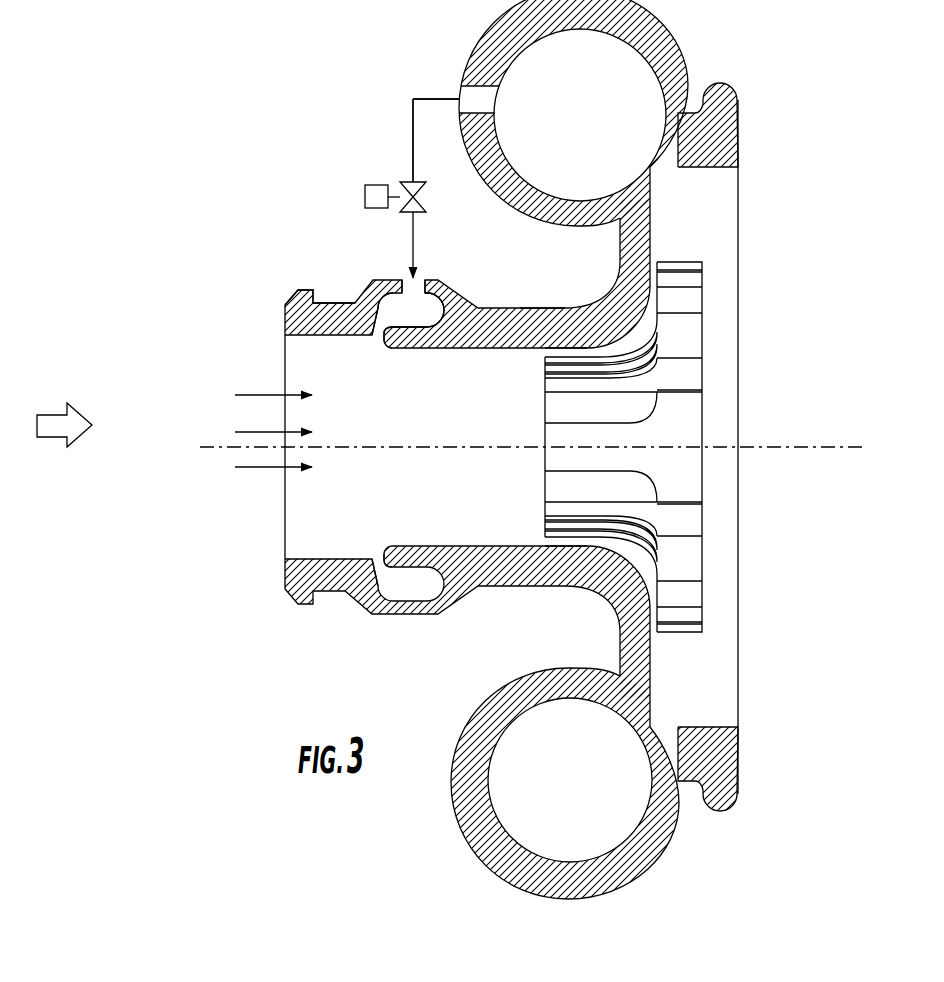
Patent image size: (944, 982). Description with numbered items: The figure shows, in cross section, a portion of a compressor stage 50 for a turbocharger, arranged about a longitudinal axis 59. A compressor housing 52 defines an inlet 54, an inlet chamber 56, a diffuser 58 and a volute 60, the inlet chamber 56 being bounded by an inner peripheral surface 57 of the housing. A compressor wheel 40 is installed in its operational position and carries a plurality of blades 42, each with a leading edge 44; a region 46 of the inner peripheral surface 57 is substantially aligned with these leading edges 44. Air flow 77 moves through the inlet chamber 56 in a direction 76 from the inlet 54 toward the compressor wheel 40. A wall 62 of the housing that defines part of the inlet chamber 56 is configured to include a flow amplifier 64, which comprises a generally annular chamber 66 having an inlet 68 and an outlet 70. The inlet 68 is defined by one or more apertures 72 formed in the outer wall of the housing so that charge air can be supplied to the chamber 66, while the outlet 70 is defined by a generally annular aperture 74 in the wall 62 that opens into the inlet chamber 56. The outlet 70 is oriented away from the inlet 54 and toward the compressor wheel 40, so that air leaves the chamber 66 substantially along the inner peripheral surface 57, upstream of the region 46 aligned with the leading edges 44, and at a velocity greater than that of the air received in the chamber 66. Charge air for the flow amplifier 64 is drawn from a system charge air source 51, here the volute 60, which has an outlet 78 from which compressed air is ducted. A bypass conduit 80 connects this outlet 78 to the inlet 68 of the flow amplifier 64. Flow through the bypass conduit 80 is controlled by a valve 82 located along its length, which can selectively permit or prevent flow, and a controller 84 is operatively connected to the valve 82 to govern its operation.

The compressor wheel 40 is at (703, 340).
The blades 42 is at (627, 410).
The leading edge 44 is at (528, 535).
The region 46 is at (547, 344).
The compressor stage 50 is at (263, 84).
The system charge air source 51 is at (419, 80).
The compressor housing 52 is at (537, 217).
The inlet 54 is at (280, 548).
The inlet chamber 56 is at (300, 498).
The inner peripheral surface 57 is at (473, 548).
The diffuser 58 is at (652, 244).
The longitudinal axis 59 is at (808, 445).
The volute 60 is at (623, 90).
The wall 62 is at (355, 300).
The flow amplifier 64 is at (376, 268).
The annular chamber 66 is at (430, 300).
The inlet 68 is at (399, 276).
The outlet 70 is at (368, 344).
The aperture 72 is at (418, 285).
The annular aperture 74 is at (383, 346).
The direction 76 is at (52, 403).
The air flow 77 is at (258, 393).
The outlet 78 is at (467, 96).
The bypass conduit 80 is at (413, 125).
The valve 82 is at (408, 190).
The controller 84 is at (365, 196).